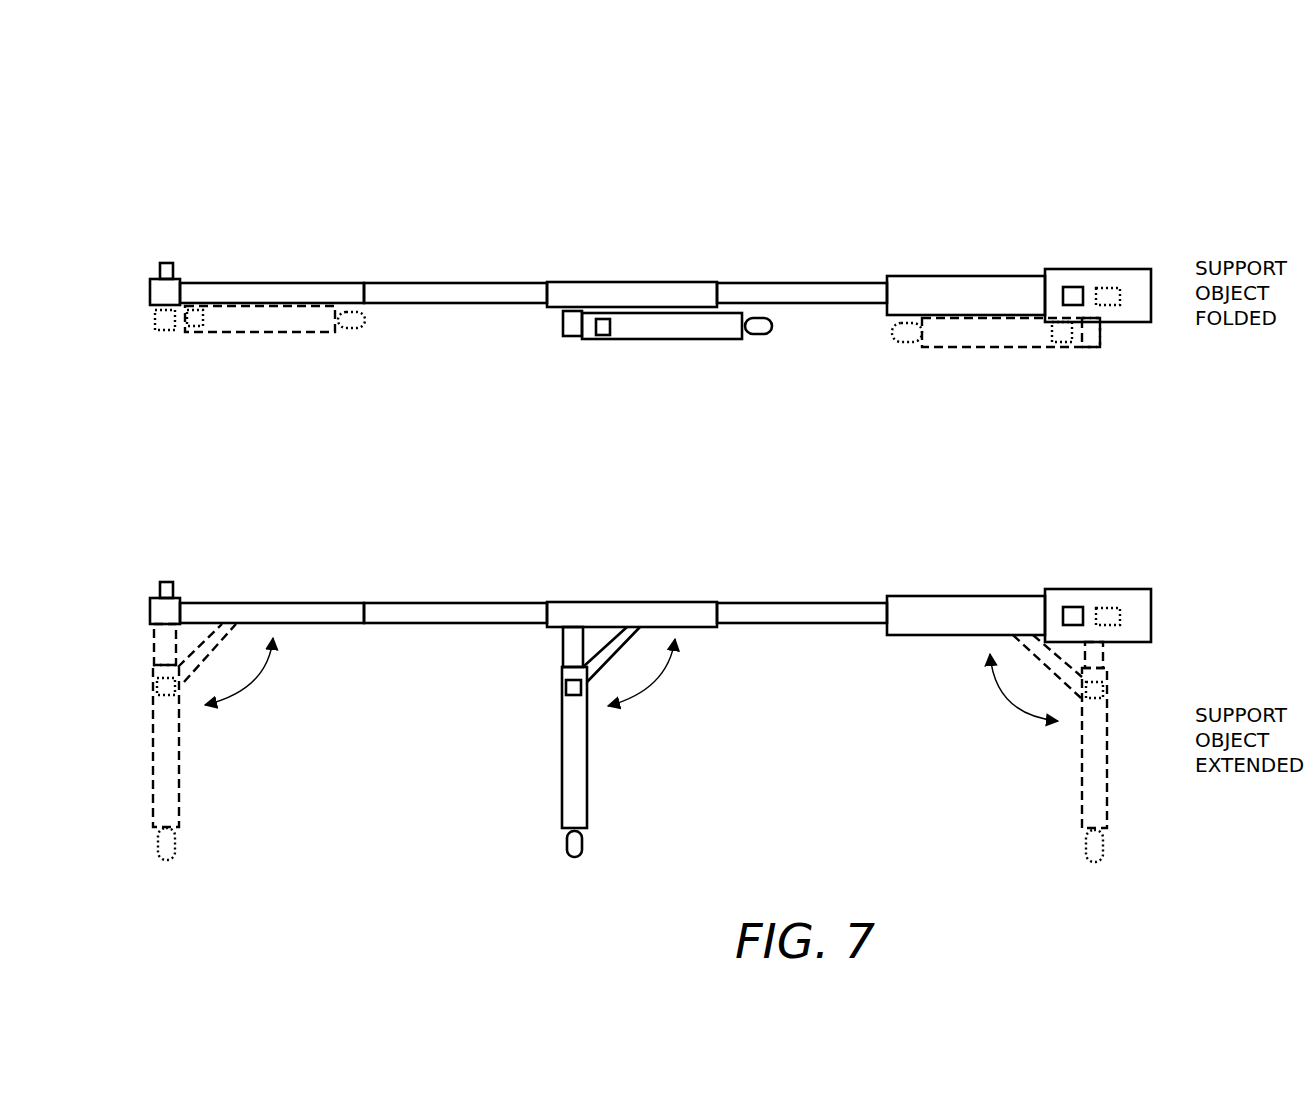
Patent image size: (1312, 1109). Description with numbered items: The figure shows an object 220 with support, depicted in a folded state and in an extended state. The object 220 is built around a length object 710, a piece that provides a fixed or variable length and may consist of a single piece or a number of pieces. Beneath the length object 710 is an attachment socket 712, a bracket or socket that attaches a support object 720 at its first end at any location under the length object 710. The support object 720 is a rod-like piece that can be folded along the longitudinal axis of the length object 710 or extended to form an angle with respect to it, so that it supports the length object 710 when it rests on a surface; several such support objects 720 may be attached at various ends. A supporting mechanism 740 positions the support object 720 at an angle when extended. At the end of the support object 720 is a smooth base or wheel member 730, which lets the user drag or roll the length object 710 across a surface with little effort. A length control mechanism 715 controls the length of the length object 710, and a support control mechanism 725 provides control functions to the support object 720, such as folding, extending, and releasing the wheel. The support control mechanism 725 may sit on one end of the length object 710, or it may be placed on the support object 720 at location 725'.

The object 220 is at (1180, 92).
The length object 710 is at (354, 283).
The attachment socket 712 is at (574, 322).
The length control mechanism 715 is at (1071, 287).
The support object 720 is at (693, 336).
The support control mechanism 725 is at (1154, 224).
The location of support control mechanism on support object 725' is at (477, 562).
The smooth base or wheel member 730 is at (176, 843).
The supporting mechanism 740 is at (597, 653).